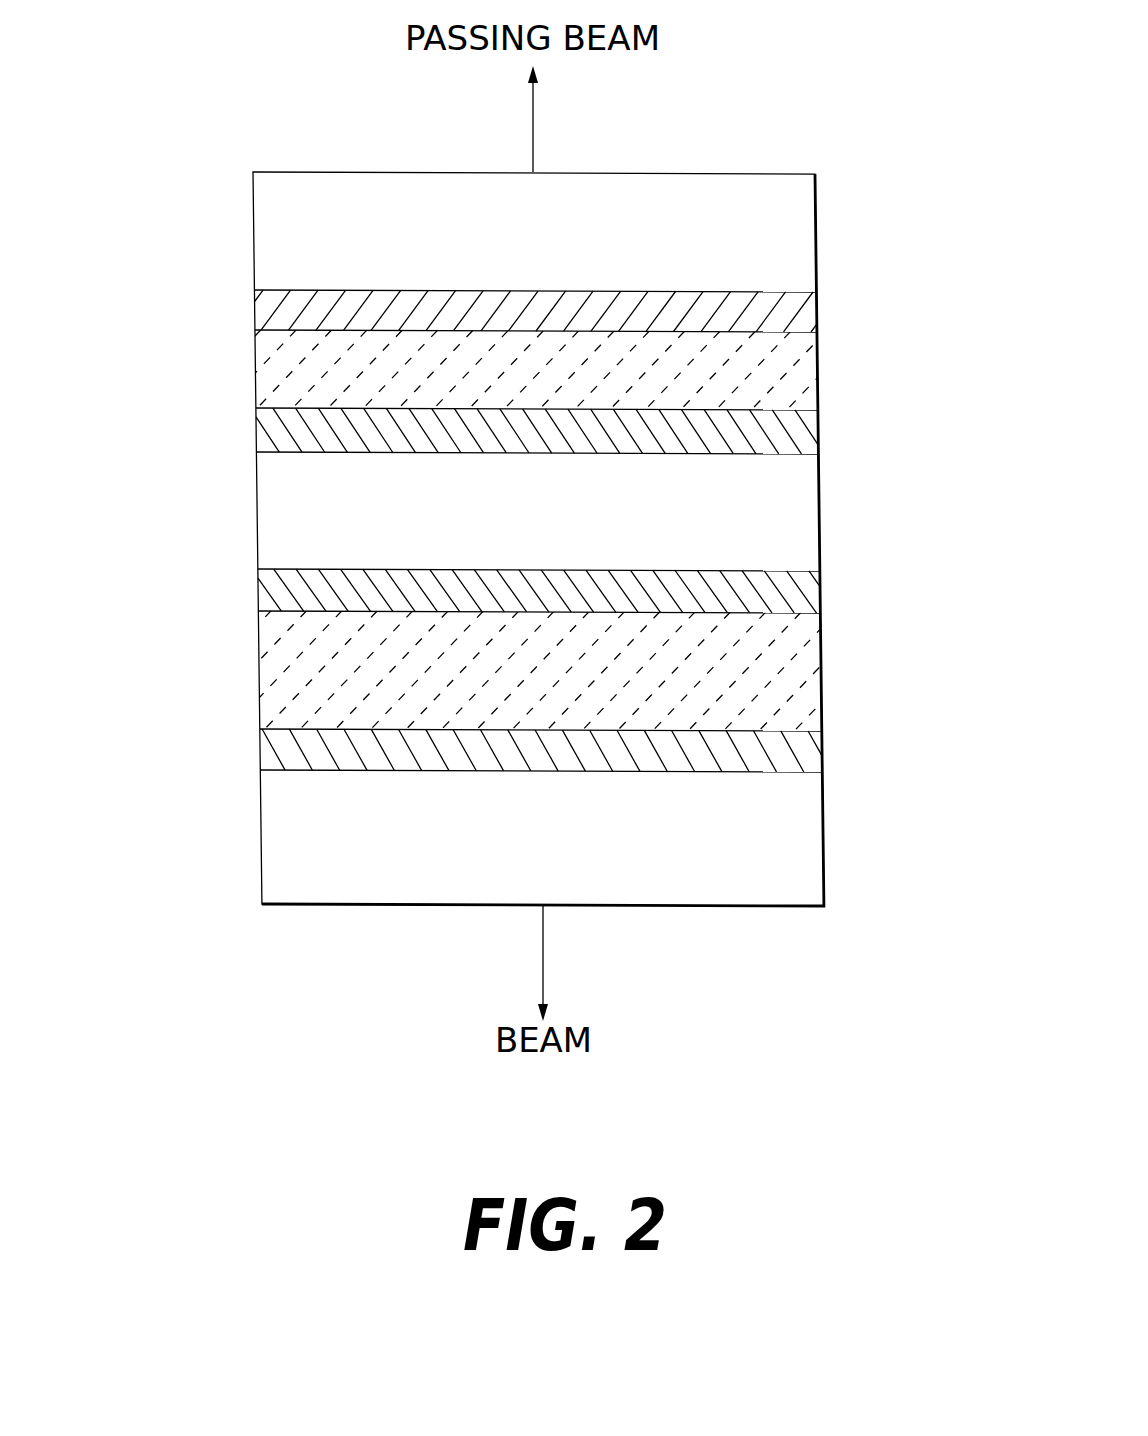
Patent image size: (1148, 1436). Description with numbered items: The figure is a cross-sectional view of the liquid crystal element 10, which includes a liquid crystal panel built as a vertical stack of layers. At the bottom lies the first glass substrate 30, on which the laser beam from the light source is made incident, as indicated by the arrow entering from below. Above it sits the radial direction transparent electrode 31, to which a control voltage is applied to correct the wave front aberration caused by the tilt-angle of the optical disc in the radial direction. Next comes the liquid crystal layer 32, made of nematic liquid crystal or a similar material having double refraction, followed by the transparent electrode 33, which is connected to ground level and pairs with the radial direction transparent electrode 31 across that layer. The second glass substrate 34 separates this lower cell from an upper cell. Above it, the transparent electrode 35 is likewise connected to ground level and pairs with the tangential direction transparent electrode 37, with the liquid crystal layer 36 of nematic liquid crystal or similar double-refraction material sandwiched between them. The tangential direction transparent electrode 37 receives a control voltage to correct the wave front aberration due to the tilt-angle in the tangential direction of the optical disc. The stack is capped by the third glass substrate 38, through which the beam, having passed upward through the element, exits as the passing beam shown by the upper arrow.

The liquid crystal element 10 is at (247, 921).
The first glass substrate 30 is at (823, 825).
The radial direction transparent electrode 31 is at (822, 750).
The liquid crystal layer 32 is at (821, 662).
The transparent electrode 33 is at (258, 590).
The second glass substrate 34 is at (819, 520).
The transparent electrode 35 is at (257, 428).
The liquid crystal layer 36 is at (817, 385).
The tangential direction transparent electrode 37 is at (254, 310).
The third glass substrate 38 is at (816, 247).